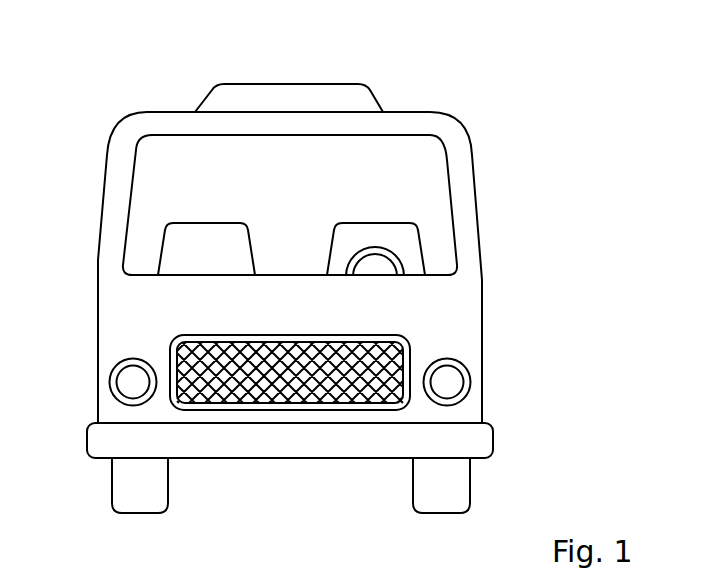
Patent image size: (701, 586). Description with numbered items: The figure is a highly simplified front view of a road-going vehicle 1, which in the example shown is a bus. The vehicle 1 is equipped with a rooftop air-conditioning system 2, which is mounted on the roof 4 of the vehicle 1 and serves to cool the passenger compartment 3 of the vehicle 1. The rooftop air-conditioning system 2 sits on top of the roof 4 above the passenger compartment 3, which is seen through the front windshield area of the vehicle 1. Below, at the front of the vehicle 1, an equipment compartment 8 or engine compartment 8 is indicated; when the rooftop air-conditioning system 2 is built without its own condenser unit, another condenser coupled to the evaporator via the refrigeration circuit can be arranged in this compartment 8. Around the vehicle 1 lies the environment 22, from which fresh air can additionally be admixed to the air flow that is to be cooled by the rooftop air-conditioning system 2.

The vehicle 1 is at (484, 292).
The rooftop air-conditioning system 2 is at (368, 84).
The passenger compartment 3 is at (275, 204).
The roof 4 is at (168, 110).
The equipment compartment 8 is at (288, 395).
The environment 22 is at (43, 250).